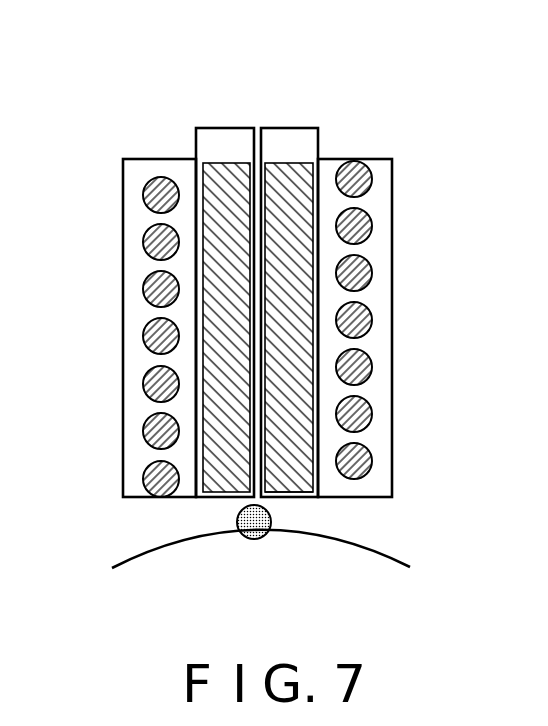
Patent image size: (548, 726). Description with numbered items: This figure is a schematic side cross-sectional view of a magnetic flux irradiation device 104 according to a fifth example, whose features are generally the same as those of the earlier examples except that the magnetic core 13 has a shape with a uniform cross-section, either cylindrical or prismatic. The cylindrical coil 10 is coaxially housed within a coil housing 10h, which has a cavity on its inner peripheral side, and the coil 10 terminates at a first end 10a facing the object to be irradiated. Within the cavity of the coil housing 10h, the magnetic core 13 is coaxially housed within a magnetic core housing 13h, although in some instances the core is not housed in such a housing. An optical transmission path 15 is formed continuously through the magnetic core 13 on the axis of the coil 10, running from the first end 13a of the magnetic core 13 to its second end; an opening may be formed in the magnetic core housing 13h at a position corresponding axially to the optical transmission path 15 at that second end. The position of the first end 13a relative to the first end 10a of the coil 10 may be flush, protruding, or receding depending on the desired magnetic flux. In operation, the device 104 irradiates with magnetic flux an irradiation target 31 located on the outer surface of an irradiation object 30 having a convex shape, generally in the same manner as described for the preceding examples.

The magnetic flux irradiation device 104 is at (116, 67).
The coil 10 is at (354, 273).
The first end of the coil 10a is at (137, 498).
The coil housing 10h is at (392, 205).
The magnetic core 13 is at (223, 163).
The magnetic core housing 13h is at (303, 128).
The first end of the magnetic core 13a is at (273, 490).
The optical transmission path 15 is at (257, 318).
The irradiation object 30 is at (390, 543).
The irradiation target 31 is at (254, 525).